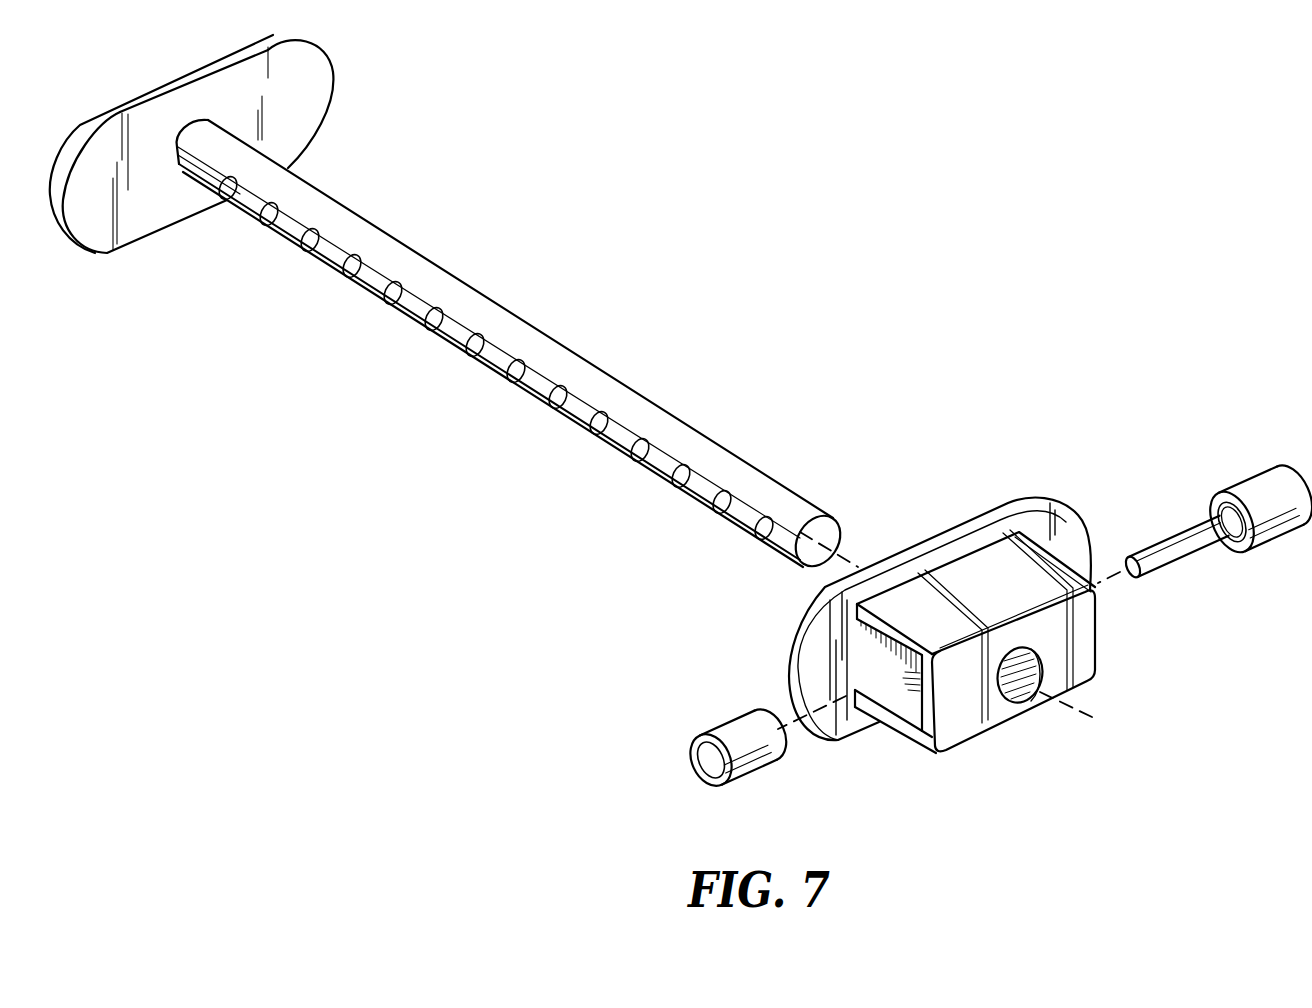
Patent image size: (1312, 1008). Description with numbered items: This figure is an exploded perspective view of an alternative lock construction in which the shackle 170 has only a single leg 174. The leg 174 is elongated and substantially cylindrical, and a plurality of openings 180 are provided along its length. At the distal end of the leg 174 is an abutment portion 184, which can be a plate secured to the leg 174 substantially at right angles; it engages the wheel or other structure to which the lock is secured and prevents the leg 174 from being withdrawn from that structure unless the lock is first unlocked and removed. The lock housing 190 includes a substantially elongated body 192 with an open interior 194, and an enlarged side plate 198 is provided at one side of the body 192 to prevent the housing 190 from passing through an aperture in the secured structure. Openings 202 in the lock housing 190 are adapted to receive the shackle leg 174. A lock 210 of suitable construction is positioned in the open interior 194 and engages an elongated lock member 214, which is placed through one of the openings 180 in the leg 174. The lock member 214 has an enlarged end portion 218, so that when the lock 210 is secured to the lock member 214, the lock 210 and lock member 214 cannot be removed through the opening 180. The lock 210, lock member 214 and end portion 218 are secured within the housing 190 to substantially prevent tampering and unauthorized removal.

The shackle 170 is at (453, 227).
The leg 174 is at (520, 328).
The openings 180 is at (308, 243).
The abutment portion 184 is at (306, 108).
The lock housing 190 is at (1110, 654).
The body 192 is at (957, 722).
The open interior 194 is at (915, 708).
The side plate 198 is at (1010, 498).
The openings 202 is at (1033, 690).
The lock 210 is at (734, 730).
The lock member 214 is at (1180, 528).
The end portion 218 is at (1248, 480).